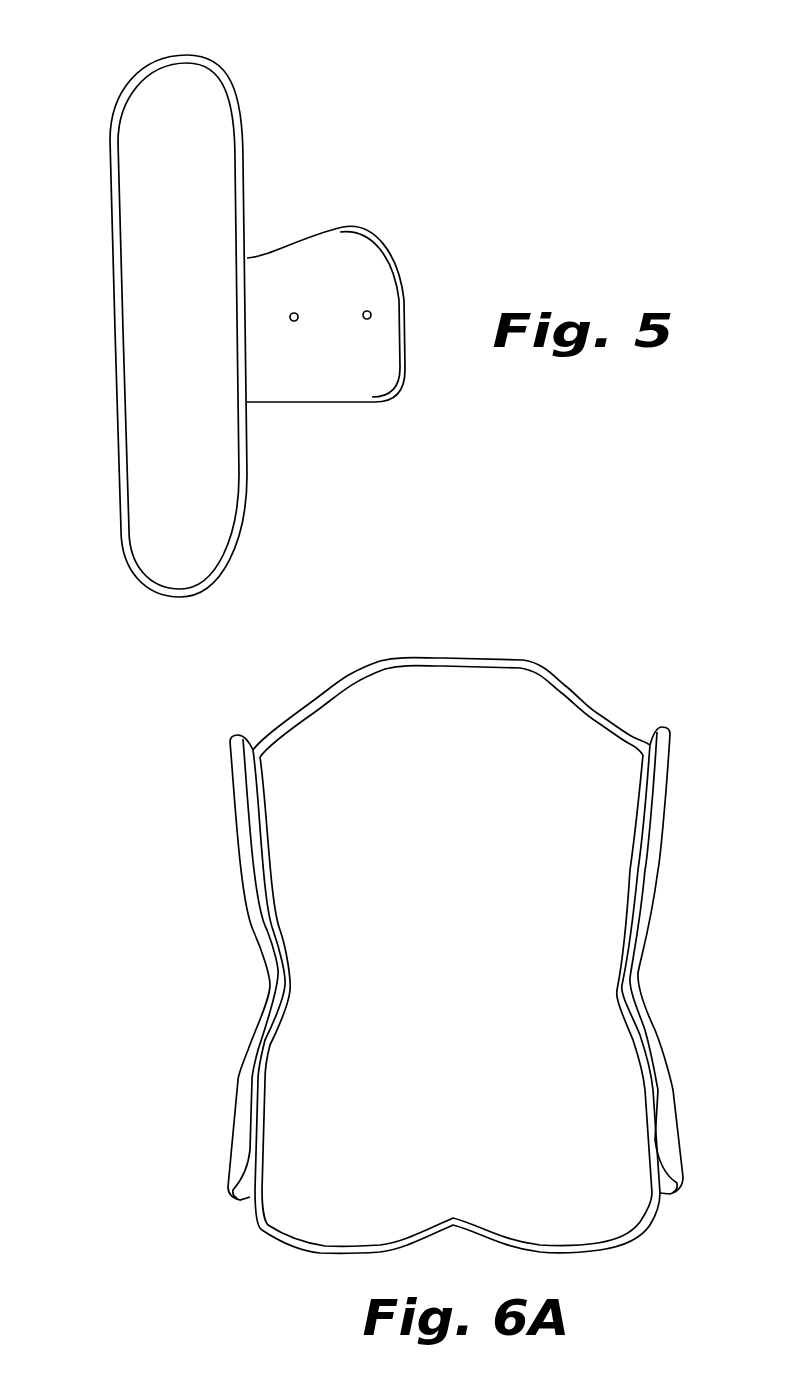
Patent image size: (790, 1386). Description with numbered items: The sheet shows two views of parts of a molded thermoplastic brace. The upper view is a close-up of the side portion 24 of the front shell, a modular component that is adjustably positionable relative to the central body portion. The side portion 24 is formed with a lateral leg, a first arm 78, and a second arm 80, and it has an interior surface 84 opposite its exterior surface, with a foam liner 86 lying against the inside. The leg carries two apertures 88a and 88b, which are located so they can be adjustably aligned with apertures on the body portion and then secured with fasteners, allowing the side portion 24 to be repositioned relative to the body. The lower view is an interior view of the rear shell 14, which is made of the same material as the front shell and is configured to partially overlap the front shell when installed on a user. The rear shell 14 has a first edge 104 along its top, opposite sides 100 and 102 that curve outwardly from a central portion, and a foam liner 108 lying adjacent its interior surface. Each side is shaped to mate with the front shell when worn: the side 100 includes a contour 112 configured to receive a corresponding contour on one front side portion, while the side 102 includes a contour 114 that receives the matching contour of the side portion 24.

In FIG. 5, the side portion 24 is at (93, 75).
In FIG. 5, the first arm 78 is at (197, 113).
In FIG. 5, the second arm 80 is at (165, 540).
In FIG. 5, the foam liner 86 is at (164, 322).
In FIG. 5, the interior surface 84 is at (310, 380).
In FIG. 5, the aperture 88a is at (294, 311).
In FIG. 5, the aperture 88b is at (369, 310).
In FIG. 6A, the rear shell 14 is at (520, 640).
In FIG. 6A, the first edge 104 is at (427, 658).
In FIG. 6A, the foam liner 108 is at (436, 972).
In FIG. 6A, the side 100 is at (247, 980).
In FIG. 6A, the side 102 is at (667, 957).
In FIG. 6A, the contour 112 is at (272, 993).
In FIG. 6A, the contour 114 is at (628, 978).